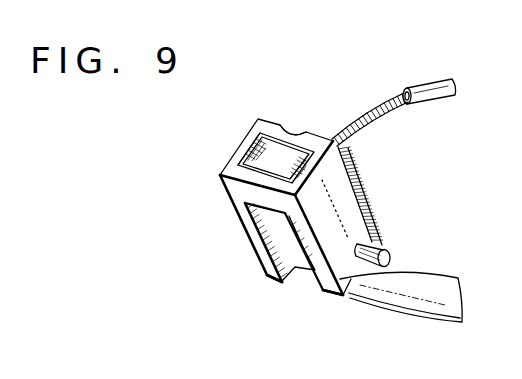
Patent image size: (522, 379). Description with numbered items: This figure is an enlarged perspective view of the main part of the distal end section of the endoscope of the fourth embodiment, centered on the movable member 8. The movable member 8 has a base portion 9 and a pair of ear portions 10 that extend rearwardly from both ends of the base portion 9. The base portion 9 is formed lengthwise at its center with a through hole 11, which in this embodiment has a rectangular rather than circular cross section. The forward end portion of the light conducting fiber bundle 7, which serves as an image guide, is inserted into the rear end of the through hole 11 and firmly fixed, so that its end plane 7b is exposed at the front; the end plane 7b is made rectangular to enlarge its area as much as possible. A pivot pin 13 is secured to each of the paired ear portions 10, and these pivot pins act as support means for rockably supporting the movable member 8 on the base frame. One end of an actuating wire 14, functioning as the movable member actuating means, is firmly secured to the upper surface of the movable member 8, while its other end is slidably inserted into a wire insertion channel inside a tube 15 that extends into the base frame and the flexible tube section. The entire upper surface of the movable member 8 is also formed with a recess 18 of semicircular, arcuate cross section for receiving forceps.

The light conducting fiber bundle 7 is at (418, 312).
The end plane 7b is at (254, 158).
The movable member 8 is at (372, 205).
The base portion 9 is at (263, 206).
The ear portions 10 is at (272, 277).
The through hole 11 is at (250, 173).
The pivot pin 13 is at (383, 249).
The actuating wire 14 is at (362, 111).
The tube 15 is at (429, 84).
The recess 18 is at (295, 134).